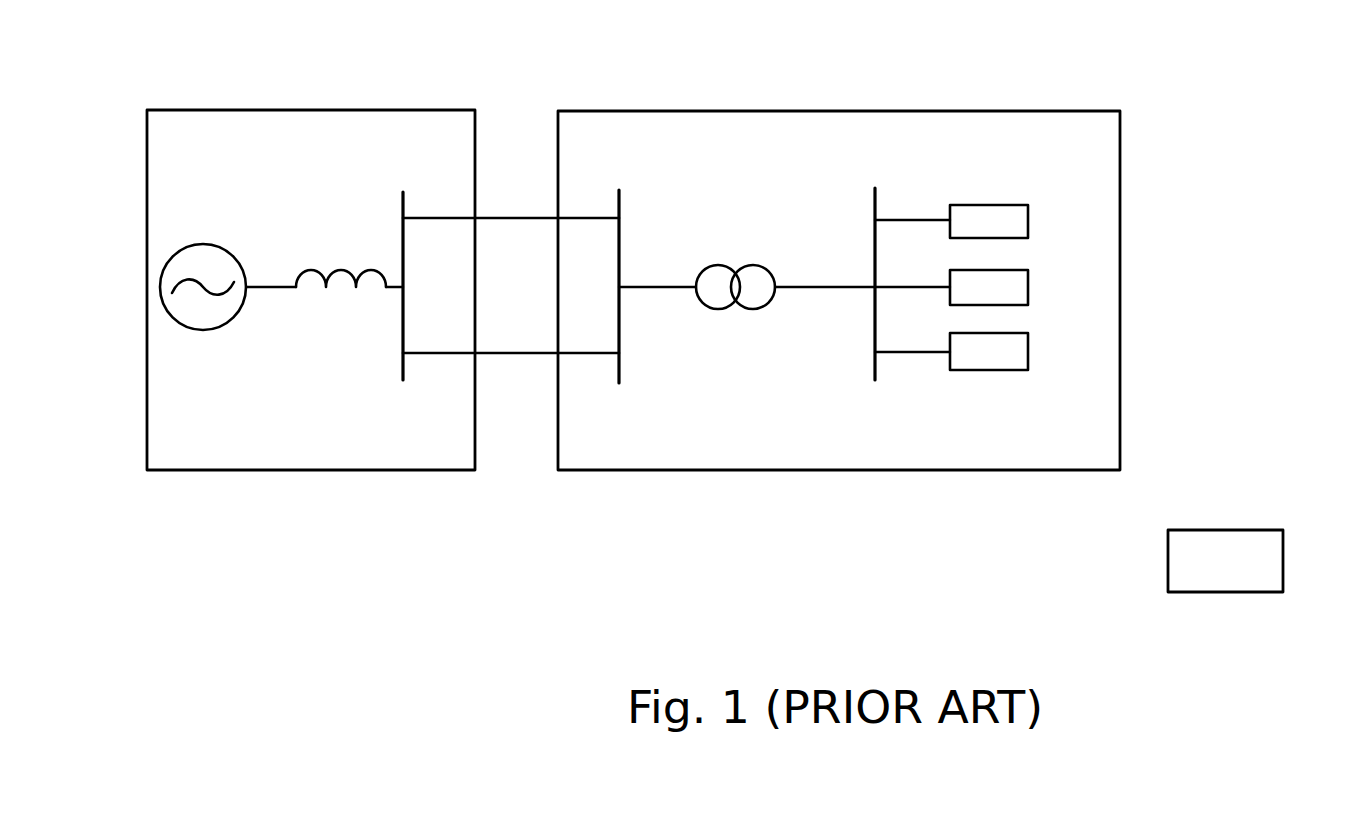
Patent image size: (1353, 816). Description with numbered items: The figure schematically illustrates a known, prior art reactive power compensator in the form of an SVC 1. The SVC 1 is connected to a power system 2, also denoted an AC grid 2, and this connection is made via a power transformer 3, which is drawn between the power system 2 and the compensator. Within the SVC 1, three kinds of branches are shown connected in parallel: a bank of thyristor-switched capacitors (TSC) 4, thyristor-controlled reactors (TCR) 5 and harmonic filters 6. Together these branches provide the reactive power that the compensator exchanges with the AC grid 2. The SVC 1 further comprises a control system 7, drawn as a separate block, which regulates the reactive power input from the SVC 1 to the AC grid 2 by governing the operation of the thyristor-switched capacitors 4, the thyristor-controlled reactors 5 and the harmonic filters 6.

The SVC 1 is at (1062, 135).
The power system 2 is at (210, 142).
The power transformer 3 is at (757, 275).
The thyristor-switched capacitors 4 is at (1028, 225).
The thyristor-controlled reactors 5 is at (1028, 290).
The harmonic filters 6 is at (1028, 355).
The control system 7 is at (1270, 542).